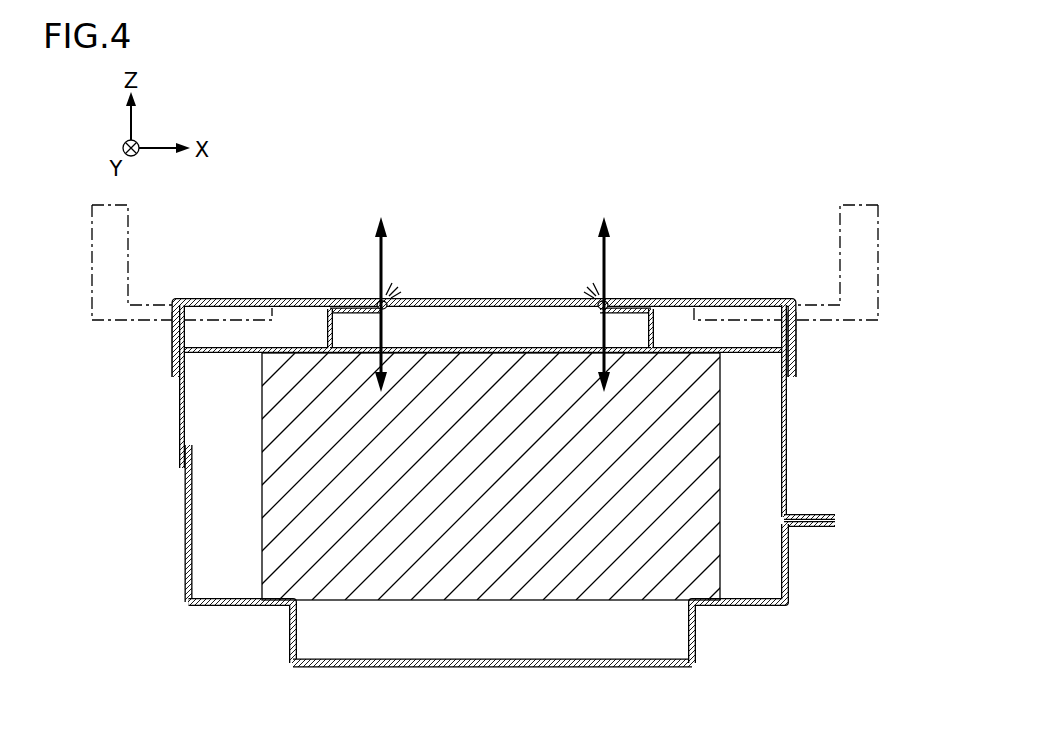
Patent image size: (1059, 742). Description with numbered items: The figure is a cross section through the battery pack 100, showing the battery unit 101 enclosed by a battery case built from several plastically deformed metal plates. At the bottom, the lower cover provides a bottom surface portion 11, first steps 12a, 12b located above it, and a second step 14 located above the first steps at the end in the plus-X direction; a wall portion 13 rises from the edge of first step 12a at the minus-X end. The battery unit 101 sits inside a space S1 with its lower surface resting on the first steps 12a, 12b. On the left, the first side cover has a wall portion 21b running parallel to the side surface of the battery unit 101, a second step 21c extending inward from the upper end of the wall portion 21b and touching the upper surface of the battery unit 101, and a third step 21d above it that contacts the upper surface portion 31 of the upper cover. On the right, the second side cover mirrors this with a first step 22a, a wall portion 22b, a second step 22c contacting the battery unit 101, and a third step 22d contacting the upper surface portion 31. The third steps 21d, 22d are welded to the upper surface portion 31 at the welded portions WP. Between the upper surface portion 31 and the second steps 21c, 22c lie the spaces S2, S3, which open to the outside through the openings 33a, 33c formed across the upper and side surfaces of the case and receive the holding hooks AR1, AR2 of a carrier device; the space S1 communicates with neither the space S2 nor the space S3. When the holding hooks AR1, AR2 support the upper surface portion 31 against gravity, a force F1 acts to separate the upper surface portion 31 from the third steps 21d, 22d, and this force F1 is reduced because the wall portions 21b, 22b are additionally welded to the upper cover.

The battery pack 100 is at (485, 435).
The battery unit 101 is at (312, 530).
The bottom surface portion 11 is at (493, 668).
The first step 12a is at (228, 607).
The first step 12b is at (742, 607).
The wall portion 13 is at (185, 494).
The second step 14 is at (820, 528).
The wall portion 21b is at (178, 440).
The second step 21c is at (218, 353).
The third step 21d is at (397, 311).
The first step 22a is at (820, 514).
The wall portion 22b is at (790, 437).
The second step 22c is at (752, 353).
The third step 22d is at (588, 311).
The upper surface portion 31 is at (492, 297).
The opening 33a is at (197, 297).
The opening 33c is at (771, 297).
The space S1 is at (626, 645).
The space S2 is at (305, 318).
The space S3 is at (675, 318).
The welded portion WP is at (388, 296).
The force F1 is at (492, 290).
The holding hook AR1 is at (130, 214).
The holding hook AR2 is at (840, 214).